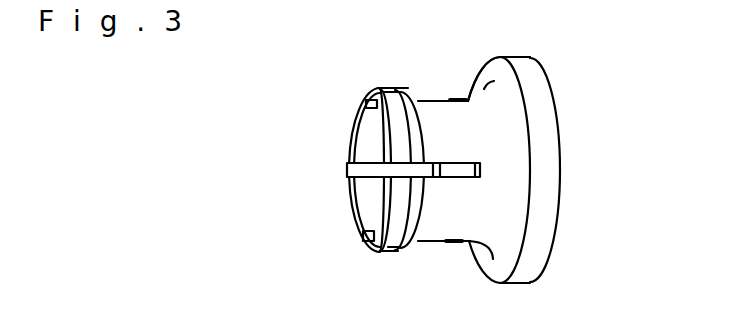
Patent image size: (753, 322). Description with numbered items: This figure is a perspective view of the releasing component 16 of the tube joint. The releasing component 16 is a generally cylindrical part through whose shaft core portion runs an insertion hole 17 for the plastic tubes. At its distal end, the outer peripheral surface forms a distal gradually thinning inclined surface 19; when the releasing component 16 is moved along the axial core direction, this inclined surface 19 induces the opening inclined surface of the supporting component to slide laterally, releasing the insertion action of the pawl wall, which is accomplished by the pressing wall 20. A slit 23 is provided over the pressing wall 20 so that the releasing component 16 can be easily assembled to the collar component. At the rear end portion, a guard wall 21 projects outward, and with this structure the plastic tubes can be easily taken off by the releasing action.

The releasing component 16 is at (453, 147).
The guard wall 21 is at (490, 73).
The pressing wall 20 is at (420, 206).
The distal gradually thinning inclined surface 19 is at (397, 123).
The insertion hole 17 is at (370, 203).
The slit 23 is at (372, 177).